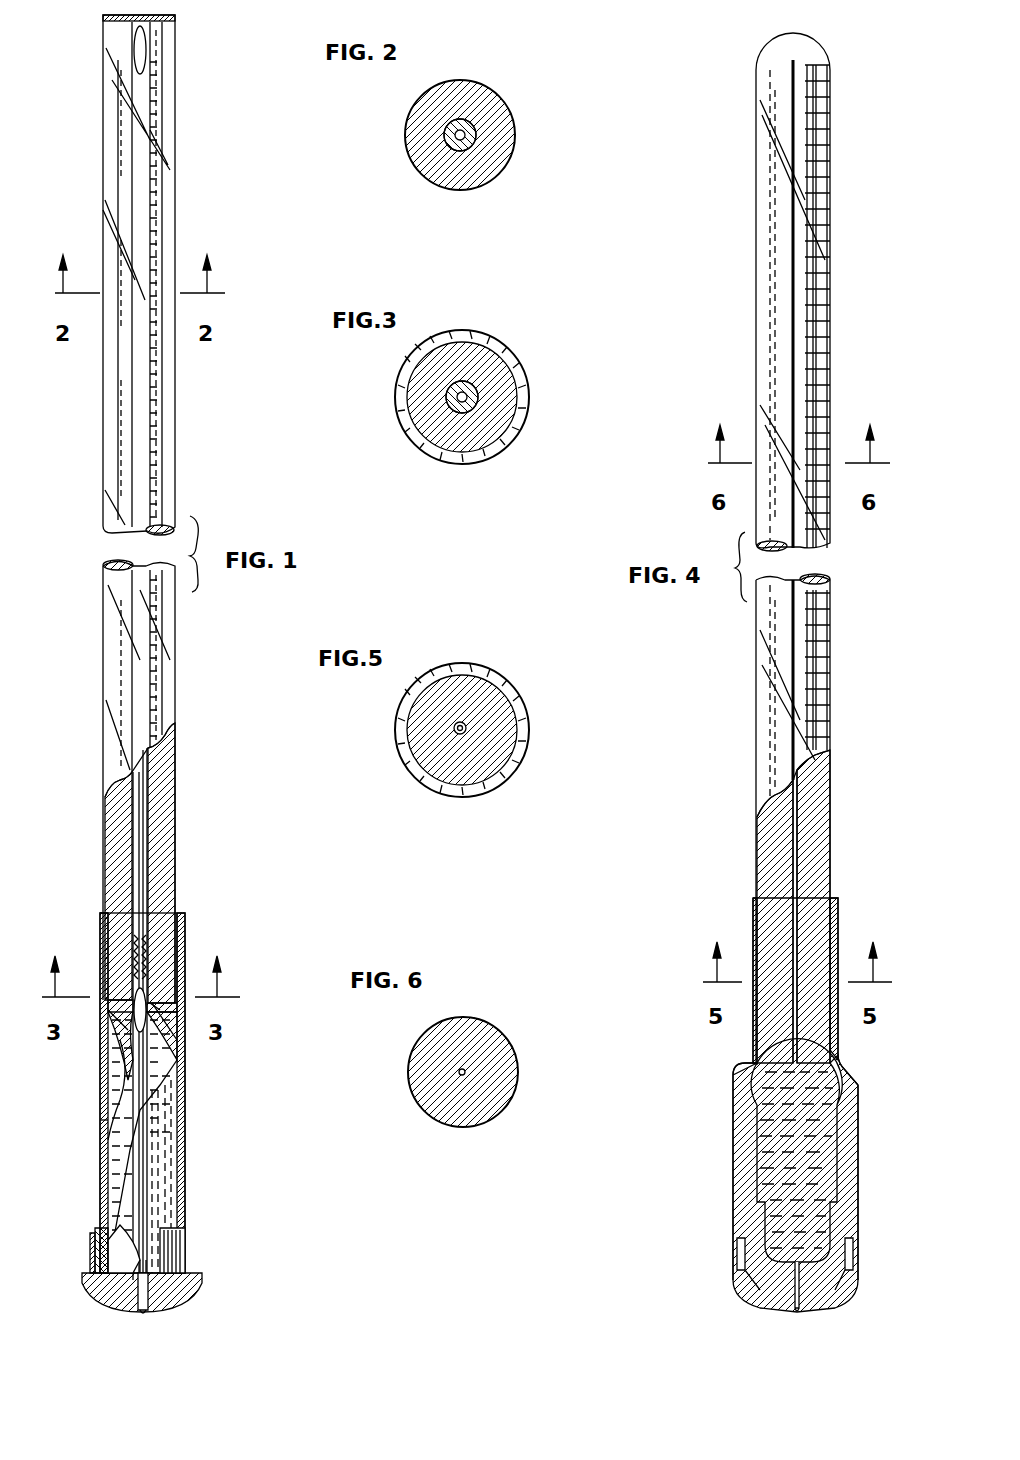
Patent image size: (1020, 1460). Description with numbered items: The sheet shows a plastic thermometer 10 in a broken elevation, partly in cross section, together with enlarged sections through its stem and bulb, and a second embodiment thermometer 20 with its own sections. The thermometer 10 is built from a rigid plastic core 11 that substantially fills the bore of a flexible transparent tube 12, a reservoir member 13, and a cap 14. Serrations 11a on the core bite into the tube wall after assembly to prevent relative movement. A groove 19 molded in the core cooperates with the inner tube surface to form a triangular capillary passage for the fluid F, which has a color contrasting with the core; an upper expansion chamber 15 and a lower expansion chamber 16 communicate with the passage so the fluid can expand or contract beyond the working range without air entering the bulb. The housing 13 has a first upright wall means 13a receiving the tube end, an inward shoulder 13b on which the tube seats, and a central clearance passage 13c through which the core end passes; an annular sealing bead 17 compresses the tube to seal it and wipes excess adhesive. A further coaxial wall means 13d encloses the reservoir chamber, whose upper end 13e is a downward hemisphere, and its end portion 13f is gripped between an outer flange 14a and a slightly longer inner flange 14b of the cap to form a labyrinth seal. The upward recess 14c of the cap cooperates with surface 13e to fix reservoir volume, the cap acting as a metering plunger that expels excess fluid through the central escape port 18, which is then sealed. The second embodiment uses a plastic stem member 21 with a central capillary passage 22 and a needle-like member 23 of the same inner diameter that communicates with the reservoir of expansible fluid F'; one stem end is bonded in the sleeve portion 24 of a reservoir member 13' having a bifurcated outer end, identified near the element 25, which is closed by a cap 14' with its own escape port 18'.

In FIG. 1, the thermometer 10 is at (192, 174).
In FIG. 1, the plastic rod or core 11 is at (147, 795).
In FIG. 2, the plastic rod or core 11 is at (472, 140).
In FIG. 3, the plastic rod or core 11 is at (480, 396).
In FIG. 1, the serrations 11a is at (150, 940).
In FIG. 1, the transparent tube 12 is at (162, 745).
In FIG. 2, the transparent tube 12 is at (498, 110).
In FIG. 3, the transparent tube 12 is at (498, 428).
In FIG. 1, the reservoir member 13 is at (142, 1093).
In FIG. 3, the reservoir member 13 is at (425, 397).
In FIG. 1, the first upright wall means 13a is at (100, 930).
In FIG. 1, the shoulder 13b is at (110, 1015).
In FIG. 1, the central clearance passage 13c is at (175, 1010).
In FIG. 1, the further wall means 13d is at (100, 1125).
In FIG. 1, the upper end of wall interior 13e is at (122, 1040).
In FIG. 1, the end portion of wall means 13f is at (110, 1280).
In FIG. 5, the reservoir member 13' is at (498, 730).
In FIG. 4, the reservoir member 13' is at (771, 1175).
In FIG. 1, the cap 14 is at (165, 1268).
In FIG. 1, the outer flange 14a is at (90, 1255).
In FIG. 1, the second flange 14b is at (100, 1238).
In FIG. 1, the recess 14c is at (150, 1250).
In FIG. 4, the cap 14' is at (783, 1303).
In FIG. 1, the upper expansion chamber 15 is at (146, 46).
In FIG. 1, the lower expansion chamber 16 is at (150, 1012).
In FIG. 3, the lower expansion chamber 16 is at (465, 385).
In FIG. 1, the annular sealing bead 17 is at (148, 1000).
In FIG. 1, the escape port 18 is at (147, 1327).
In FIG. 4, the escape port 18' is at (822, 1302).
In FIG. 1, the groove 19 is at (141, 845).
In FIG. 2, the groove 19 is at (462, 130).
In FIG. 4, the thermometer 20 is at (752, 240).
In FIG. 5, the plastic stem member 21 is at (496, 752).
In FIG. 6, the plastic stem member 21 is at (512, 1058).
In FIG. 4, the plastic stem member 21 is at (814, 397).
In FIG. 6, the central capillary passage 22 is at (465, 1074).
In FIG. 4, the central capillary passage 22 is at (795, 356).
In FIG. 5, the needle-like member 23 is at (462, 735).
In FIG. 4, the needle-like member 23 is at (798, 862).
In FIG. 4, the sleeve portion 24 is at (838, 945).
In FIG. 4, the retaining ring 25 is at (858, 1250).
In FIG. 1, the fluid F is at (92, 1171).
In FIG. 4, the expansible fluid F' is at (753, 1198).